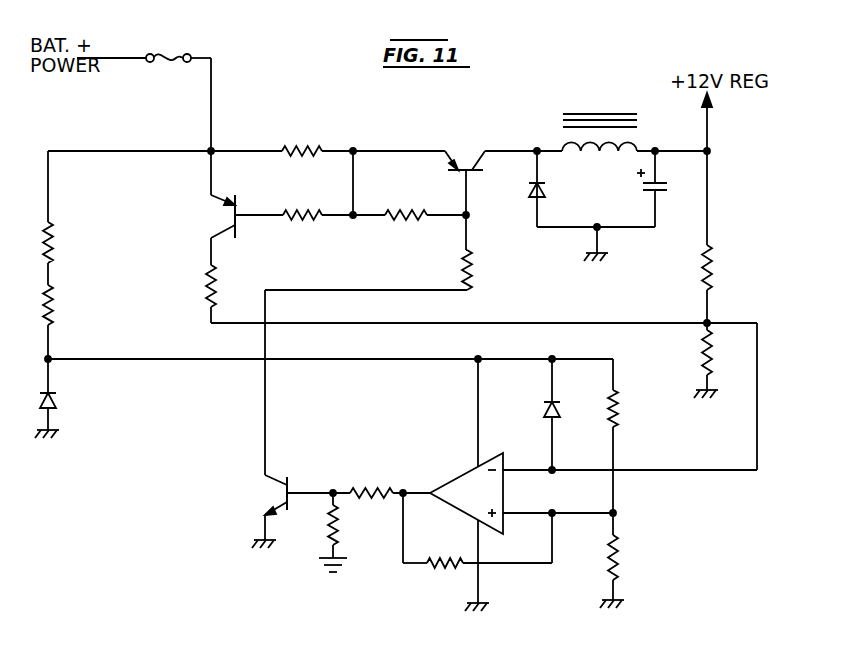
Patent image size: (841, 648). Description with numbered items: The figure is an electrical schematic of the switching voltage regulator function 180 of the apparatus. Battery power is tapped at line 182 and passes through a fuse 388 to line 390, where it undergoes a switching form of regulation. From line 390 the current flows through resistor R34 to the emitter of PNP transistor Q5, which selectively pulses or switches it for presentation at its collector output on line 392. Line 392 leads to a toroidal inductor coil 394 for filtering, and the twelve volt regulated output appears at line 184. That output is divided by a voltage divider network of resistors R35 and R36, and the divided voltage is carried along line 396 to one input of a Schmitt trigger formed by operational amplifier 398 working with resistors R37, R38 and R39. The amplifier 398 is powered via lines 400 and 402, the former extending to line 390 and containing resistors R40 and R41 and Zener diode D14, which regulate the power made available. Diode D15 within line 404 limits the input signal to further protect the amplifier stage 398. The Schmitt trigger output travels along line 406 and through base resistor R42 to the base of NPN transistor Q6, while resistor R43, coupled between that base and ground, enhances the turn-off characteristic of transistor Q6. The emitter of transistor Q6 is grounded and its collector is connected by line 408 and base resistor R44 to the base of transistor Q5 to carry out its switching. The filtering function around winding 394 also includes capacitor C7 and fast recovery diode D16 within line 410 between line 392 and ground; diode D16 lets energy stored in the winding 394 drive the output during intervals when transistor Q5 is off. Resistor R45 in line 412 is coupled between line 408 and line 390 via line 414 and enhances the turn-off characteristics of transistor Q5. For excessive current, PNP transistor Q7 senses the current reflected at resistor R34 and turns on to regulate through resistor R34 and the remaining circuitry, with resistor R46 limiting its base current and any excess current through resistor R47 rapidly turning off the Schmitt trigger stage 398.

The voltage regulator function 180 is at (638, 58).
The line 182 is at (125, 57).
The line 184 is at (707, 120).
The fuse 388 is at (181, 56).
The line 390 is at (236, 151).
The line 392 is at (521, 151).
The toroidal inductor coil 394 is at (586, 153).
The line 396 is at (755, 476).
The operational amplifier 398 is at (457, 468).
The line 400 is at (394, 359).
The line 402 is at (477, 395).
The line 404 is at (554, 449).
The line 406 is at (412, 491).
The line 408 is at (266, 418).
The line 410 is at (636, 227).
The line 412 is at (374, 219).
The line 414 is at (355, 188).
The PNP transistor Q5 is at (466, 166).
The NPN transistor Q6 is at (276, 480).
The PNP transistor Q7 is at (230, 216).
The Zener diode D14 is at (57, 402).
The diode D15 is at (555, 409).
The fast recovery diode D16 is at (540, 192).
The capacitor C7 is at (658, 187).
The resistor R34 is at (292, 146).
The resistor R35 is at (712, 262).
The resistor R36 is at (703, 352).
The resistor R37 is at (620, 545).
The resistor R38 is at (619, 420).
The resistor R39 is at (433, 570).
The resistor R40 is at (58, 241).
The resistor R41 is at (58, 304).
The base resistor R42 is at (358, 503).
The resistor R43 is at (326, 540).
The base resistor R44 is at (473, 256).
The resistor R45 is at (408, 221).
The resistor R46 is at (288, 221).
The resistor R47 is at (216, 280).